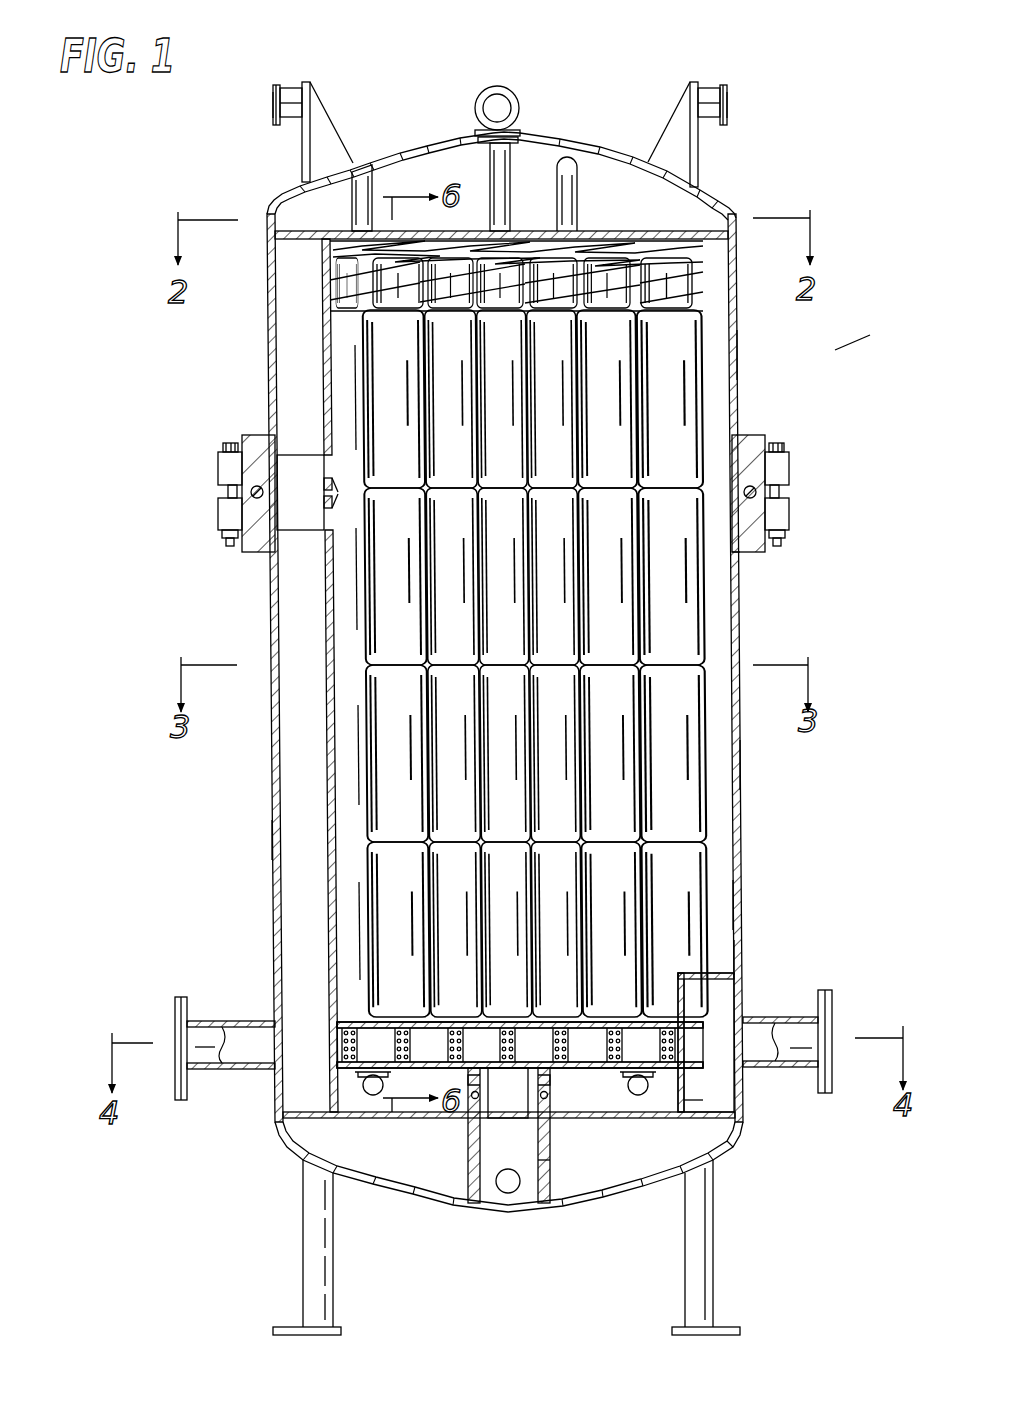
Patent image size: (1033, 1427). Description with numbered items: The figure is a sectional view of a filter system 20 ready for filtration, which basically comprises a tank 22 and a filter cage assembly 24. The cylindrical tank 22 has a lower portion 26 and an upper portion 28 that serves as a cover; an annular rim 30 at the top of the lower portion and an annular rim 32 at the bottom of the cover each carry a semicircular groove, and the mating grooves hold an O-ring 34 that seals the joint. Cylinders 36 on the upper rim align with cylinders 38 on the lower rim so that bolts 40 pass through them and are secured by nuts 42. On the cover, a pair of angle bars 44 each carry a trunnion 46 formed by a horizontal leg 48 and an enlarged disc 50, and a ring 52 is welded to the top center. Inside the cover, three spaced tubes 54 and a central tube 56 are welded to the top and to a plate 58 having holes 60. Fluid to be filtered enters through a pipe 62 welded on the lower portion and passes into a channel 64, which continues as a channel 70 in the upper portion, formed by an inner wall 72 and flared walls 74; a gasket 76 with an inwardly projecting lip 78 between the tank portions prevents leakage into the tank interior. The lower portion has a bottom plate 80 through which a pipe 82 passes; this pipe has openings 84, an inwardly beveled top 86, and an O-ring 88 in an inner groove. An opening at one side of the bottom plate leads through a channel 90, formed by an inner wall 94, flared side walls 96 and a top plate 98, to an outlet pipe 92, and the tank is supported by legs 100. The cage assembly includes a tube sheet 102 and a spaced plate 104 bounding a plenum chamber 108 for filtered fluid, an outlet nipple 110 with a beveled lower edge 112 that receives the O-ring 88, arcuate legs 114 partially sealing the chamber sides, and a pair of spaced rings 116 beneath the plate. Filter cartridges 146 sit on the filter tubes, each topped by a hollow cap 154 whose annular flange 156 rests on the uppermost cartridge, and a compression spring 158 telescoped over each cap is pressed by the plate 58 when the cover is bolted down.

The filter system 20 is at (840, 349).
The tank 22 is at (748, 628).
The filter cage assembly 24 is at (706, 915).
The lower portion 26 is at (741, 762).
The upper portion 28 is at (739, 350).
The annular rim 30 is at (741, 556).
The annular rim 32 is at (758, 436).
The O-ring 34 is at (756, 488).
The cylinders 36 is at (218, 458).
The cylinders 38 is at (218, 512).
The bolts 40 is at (228, 492).
The nuts 42 is at (228, 540).
The angle bars 44 is at (334, 128).
The trunnion 46 is at (278, 85).
The leg 48 is at (292, 88).
The disc 50 is at (272, 105).
The ring 52 is at (512, 95).
The tubes 54 is at (374, 182).
The tube 56 is at (512, 150).
The plate 58 is at (625, 222).
The holes 60 is at (700, 238).
The pipe 62 is at (222, 1008).
The channel 64 is at (273, 838).
The channel 70 is at (277, 360).
The inner wall 72 is at (325, 418).
The flared walls 74 is at (301, 257).
The gasket 76 is at (310, 531).
The lip 78 is at (338, 492).
The bottom plate 80 is at (340, 1118).
The pipe 82 is at (556, 1135).
The openings 84 is at (496, 1180).
The beveled top 86 is at (538, 1068).
The O-ring 88 is at (470, 1100).
The channel 90 is at (706, 1042).
The outlet pipe 92 is at (770, 1017).
The inner wall 94 is at (684, 1088).
The flared side walls 96 is at (743, 1108).
The top plate 98 is at (735, 964).
The legs 100 is at (334, 1235).
The tube sheet 102 is at (388, 1022).
The plate 104 is at (604, 1070).
The plenum chamber 108 is at (400, 1040).
The outlet nipple 110 is at (509, 1110).
The beveled lower edge 112 is at (478, 1110).
The arcuate legs 114 is at (684, 1112).
The rings 116 is at (362, 1088).
The filter cartridges 146 is at (531, 663).
The hollow cap 154 is at (372, 300).
The annular flange 156 is at (402, 308).
The compression spring 158 is at (375, 280).